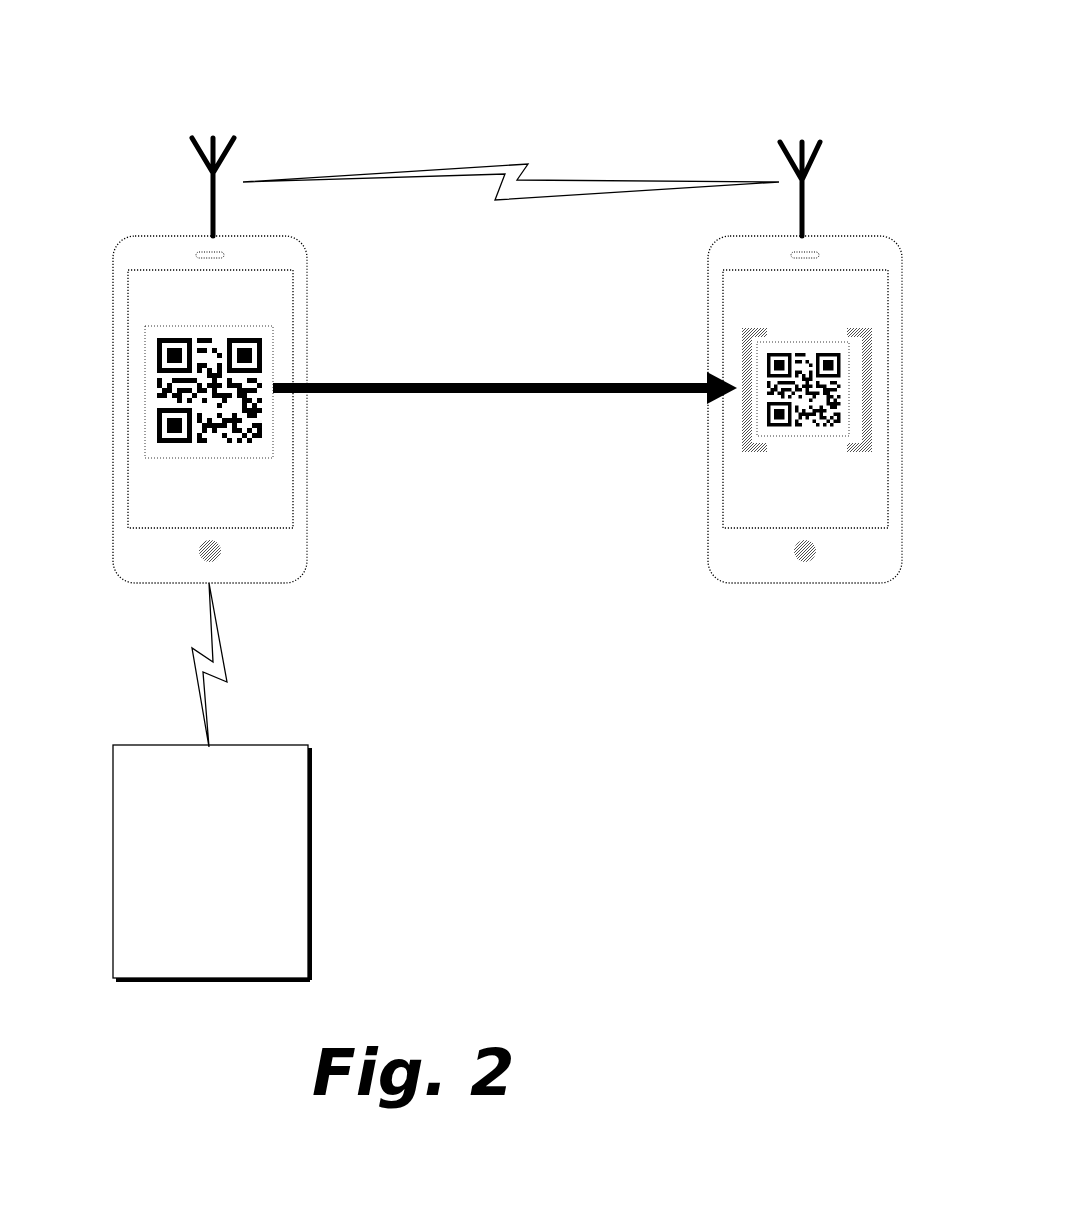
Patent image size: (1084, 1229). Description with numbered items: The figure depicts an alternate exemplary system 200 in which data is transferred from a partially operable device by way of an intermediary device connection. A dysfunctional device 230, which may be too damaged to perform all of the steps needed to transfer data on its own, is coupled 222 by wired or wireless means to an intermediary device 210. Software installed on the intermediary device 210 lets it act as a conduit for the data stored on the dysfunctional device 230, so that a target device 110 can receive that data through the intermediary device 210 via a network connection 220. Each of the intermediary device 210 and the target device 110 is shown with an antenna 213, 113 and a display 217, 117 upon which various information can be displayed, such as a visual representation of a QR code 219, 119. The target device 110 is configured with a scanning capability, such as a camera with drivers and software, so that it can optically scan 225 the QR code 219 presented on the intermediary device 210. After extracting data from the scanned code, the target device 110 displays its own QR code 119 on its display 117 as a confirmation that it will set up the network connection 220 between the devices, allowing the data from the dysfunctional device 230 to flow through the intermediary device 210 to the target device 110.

The system 200 is at (514, 31).
The intermediary device 210 is at (178, 234).
The antenna of first mobile device 213 is at (238, 144).
The display 217 is at (158, 270).
The QR code 219 is at (157, 350).
The network connection 220 is at (498, 165).
The coupling 222 is at (226, 662).
The optical scan 225 is at (527, 383).
The dysfunctional device 230 is at (262, 745).
The target device 110 is at (856, 236).
The antenna of second mobile device 113 is at (820, 148).
The display 117 is at (862, 270).
The QR code 119 is at (836, 405).